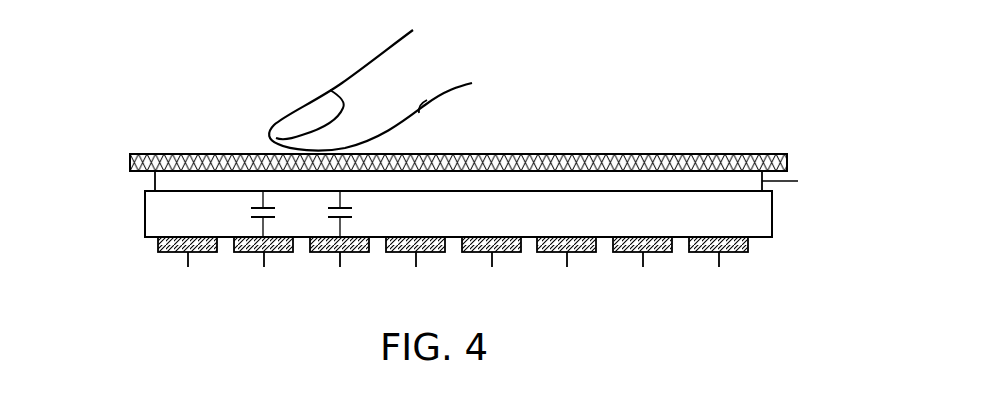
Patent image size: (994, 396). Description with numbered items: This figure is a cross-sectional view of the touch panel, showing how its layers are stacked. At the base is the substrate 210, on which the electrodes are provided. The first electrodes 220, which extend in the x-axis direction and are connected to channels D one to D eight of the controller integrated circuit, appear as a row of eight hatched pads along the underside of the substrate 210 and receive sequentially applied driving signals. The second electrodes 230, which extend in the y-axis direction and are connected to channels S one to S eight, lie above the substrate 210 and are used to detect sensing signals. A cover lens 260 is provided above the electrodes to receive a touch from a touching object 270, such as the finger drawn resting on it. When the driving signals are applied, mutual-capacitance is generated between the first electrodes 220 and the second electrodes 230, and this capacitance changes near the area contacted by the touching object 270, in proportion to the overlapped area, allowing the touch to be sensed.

The touching object 270 is at (380, 76).
The cover lens 260 is at (580, 156).
The second electrodes 230 is at (160, 180).
The substrate 210 is at (152, 211).
The first electrodes 220 is at (158, 248).